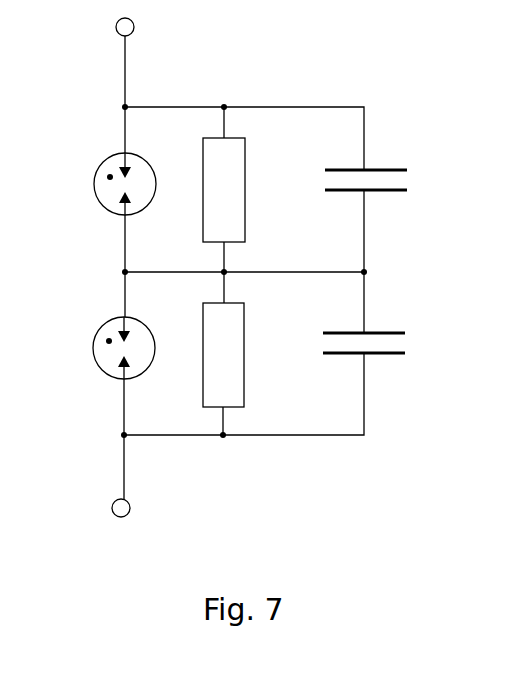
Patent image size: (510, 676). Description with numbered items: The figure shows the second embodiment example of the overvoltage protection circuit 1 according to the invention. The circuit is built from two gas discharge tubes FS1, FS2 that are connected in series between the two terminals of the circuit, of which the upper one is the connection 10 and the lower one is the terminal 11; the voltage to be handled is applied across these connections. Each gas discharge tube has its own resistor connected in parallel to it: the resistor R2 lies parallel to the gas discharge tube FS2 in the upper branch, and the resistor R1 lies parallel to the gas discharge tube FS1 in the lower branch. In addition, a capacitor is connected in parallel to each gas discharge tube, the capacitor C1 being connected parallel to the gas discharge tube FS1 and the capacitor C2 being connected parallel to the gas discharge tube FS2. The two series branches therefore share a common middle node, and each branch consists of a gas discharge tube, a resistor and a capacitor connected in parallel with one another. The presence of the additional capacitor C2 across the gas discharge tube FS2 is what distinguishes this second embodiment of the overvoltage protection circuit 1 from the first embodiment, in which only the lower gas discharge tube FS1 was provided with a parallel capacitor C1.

The overvoltage protection circuit 1 is at (362, 62).
The connection 10 is at (134, 24).
The second terminal 11 is at (128, 513).
The gas discharge tube FS1 is at (95, 352).
The gas discharge tube FS2 is at (96, 190).
The resistor R1 is at (228, 340).
The resistor R2 is at (236, 170).
The capacitor C1 is at (372, 322).
The capacitor C2 is at (384, 152).